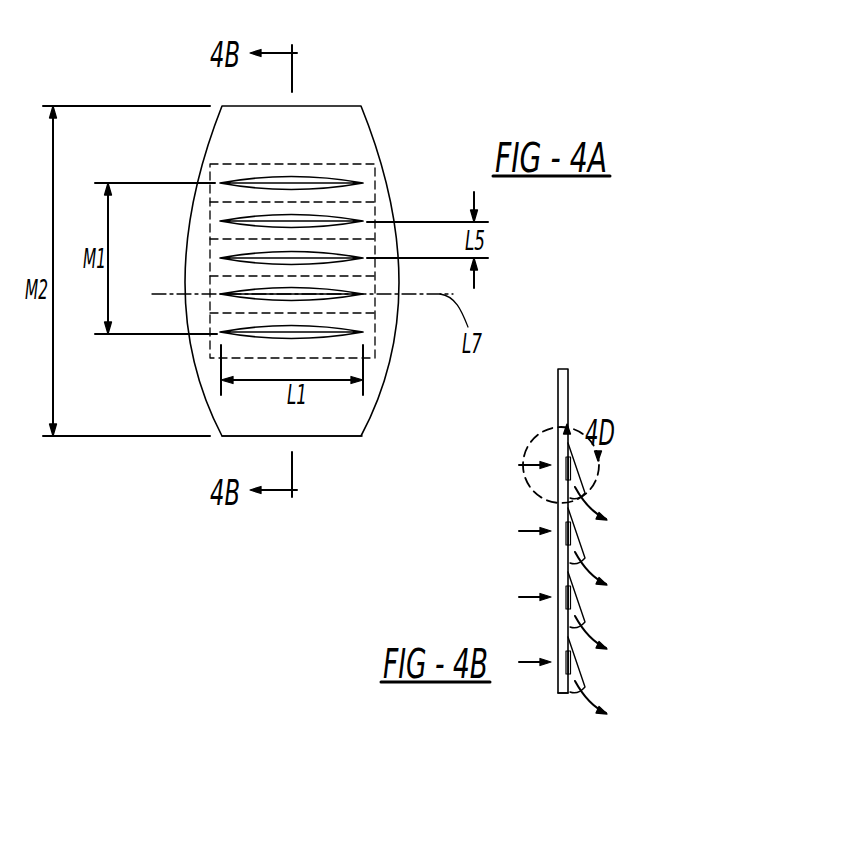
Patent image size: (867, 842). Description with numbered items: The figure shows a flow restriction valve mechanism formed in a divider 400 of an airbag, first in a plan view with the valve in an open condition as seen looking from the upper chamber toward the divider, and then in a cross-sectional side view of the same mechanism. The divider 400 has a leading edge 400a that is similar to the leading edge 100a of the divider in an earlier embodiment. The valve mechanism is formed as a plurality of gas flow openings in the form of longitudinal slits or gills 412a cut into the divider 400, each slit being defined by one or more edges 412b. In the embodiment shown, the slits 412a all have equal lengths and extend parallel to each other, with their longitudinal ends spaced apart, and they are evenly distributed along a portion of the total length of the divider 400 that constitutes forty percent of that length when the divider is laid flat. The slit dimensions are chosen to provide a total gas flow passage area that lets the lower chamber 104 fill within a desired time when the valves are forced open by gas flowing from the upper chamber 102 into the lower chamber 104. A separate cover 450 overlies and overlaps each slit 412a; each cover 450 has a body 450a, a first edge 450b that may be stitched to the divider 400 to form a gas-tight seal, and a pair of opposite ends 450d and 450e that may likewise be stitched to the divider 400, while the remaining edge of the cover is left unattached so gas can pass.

In FIG. 4A, the divider 400 is at (306, 120).
In FIG. 4B, the divider 400 is at (569, 373).
In FIG. 4A, the leading edge 400a is at (338, 437).
In FIG. 4A, the cover 450 is at (370, 300).
In FIG. 4B, the cover 450 is at (580, 474).
In FIG. 4B, the body 450a is at (578, 675).
In FIG. 4A, the first edge 450b is at (343, 163).
In FIG. 4A, the end 450d is at (210, 173).
In FIG. 4A, the end 450e is at (373, 188).
In FIG. 4A, the slit 412a is at (275, 180).
In FIG. 4A, the edge 412b is at (255, 338).
In FIG. 4B, the upper chamber 102 is at (527, 417).
In FIG. 4B, the lower chamber 104 is at (746, 590).
In FIG. 4B, the leading edge 100a is at (562, 695).